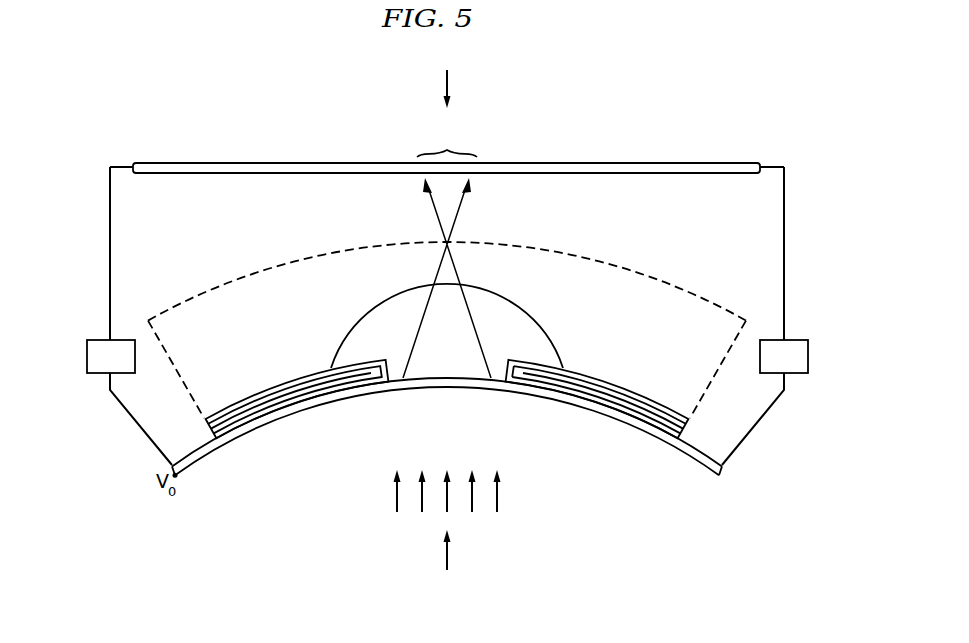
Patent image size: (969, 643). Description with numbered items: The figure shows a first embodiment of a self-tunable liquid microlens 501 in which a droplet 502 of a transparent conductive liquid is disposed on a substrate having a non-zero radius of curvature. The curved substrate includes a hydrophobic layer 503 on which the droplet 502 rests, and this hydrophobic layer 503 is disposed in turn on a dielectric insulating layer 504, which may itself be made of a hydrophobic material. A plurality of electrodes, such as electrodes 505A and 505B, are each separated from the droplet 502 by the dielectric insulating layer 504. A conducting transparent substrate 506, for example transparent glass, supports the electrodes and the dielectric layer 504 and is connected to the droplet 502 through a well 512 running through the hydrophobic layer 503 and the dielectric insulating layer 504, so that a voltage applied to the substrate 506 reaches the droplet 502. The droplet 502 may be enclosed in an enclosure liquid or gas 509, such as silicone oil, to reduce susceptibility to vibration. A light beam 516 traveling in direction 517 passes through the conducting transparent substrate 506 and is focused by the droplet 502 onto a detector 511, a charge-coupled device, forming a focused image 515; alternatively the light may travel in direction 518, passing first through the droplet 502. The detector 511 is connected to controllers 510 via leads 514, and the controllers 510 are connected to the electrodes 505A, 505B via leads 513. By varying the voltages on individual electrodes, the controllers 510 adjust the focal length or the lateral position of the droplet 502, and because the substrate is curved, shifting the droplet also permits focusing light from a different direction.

The self-tunable liquid microlens 501 is at (622, 270).
The droplet 502 is at (510, 303).
The hydrophobic layer 503 is at (618, 384).
The dielectric insulating layer 504 is at (657, 408).
The electrode 505A is at (355, 384).
The electrode 505B is at (532, 381).
The conducting transparent substrate 506 is at (273, 419).
The enclosure liquid 509 is at (265, 270).
The controllers 510 is at (447, 356).
The detector 511 is at (572, 173).
The well 512 is at (476, 348).
The leads 513 is at (133, 427).
The leads 514 is at (110, 226).
The focused image 515 is at (447, 140).
The light beam 516 is at (500, 500).
The direction 517 is at (450, 558).
The direction 518 is at (455, 83).